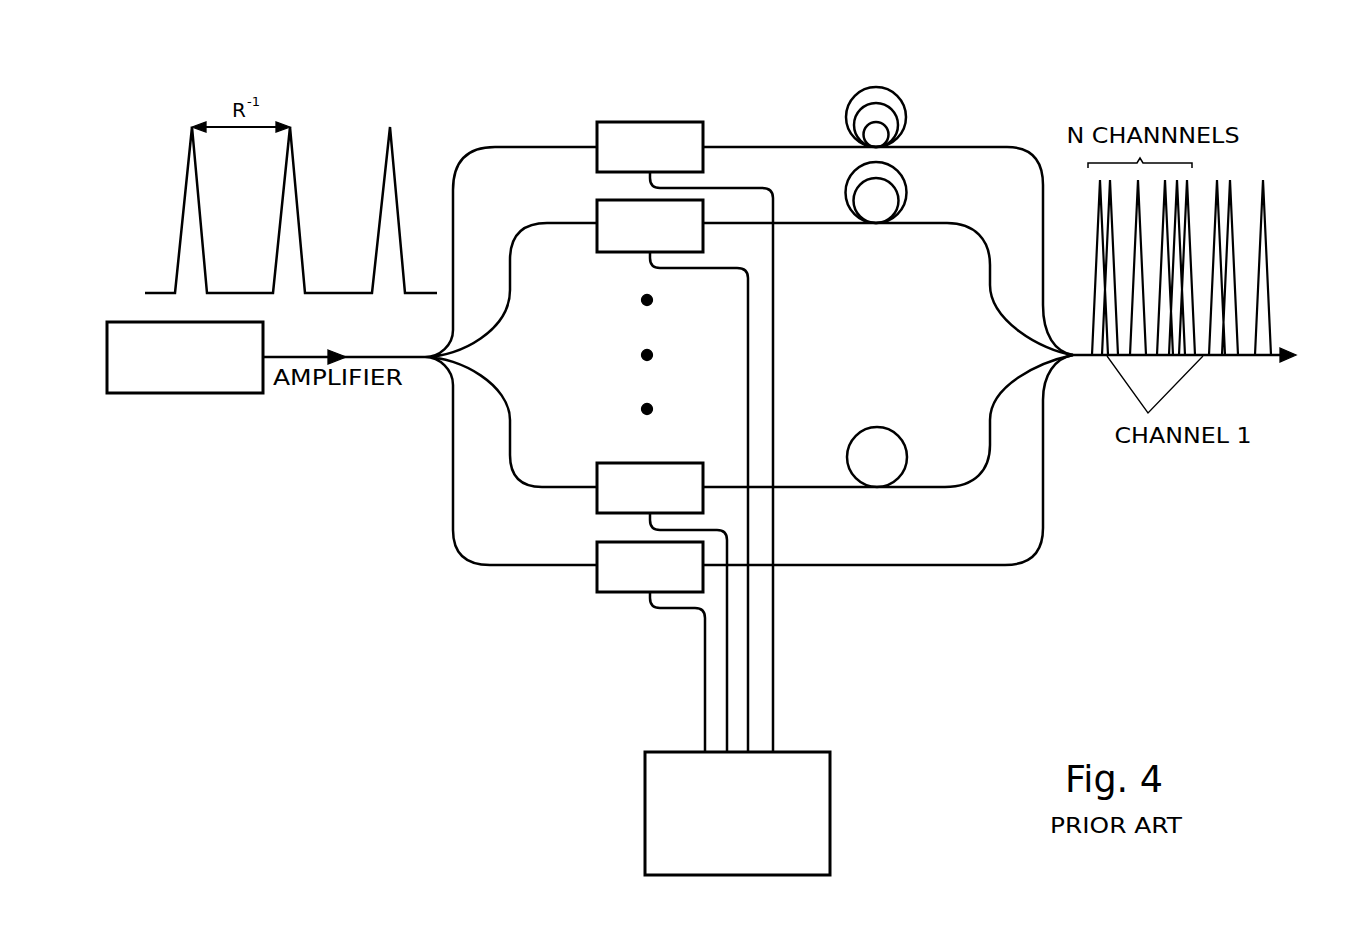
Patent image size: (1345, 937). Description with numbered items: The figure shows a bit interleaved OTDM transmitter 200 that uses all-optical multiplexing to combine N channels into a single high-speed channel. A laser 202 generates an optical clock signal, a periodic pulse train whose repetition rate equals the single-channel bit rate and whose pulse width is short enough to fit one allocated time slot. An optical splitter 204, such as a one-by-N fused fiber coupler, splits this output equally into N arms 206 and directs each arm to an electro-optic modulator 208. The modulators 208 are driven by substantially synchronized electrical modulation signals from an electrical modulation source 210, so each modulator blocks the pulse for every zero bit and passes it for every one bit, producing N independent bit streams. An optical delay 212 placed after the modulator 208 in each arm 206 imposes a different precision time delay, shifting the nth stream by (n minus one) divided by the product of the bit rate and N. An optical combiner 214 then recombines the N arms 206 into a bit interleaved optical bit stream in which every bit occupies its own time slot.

The bit interleaved OTDM transmitter 200 is at (654, 44).
The laser 202 is at (198, 394).
The optical splitter 204 is at (428, 361).
The arms 206 is at (488, 149).
The electro-optic modulator 208 is at (683, 122).
The electrical modulation source 210 is at (800, 752).
The optical delay 212 is at (906, 118).
The optical combiner 214 is at (1078, 358).